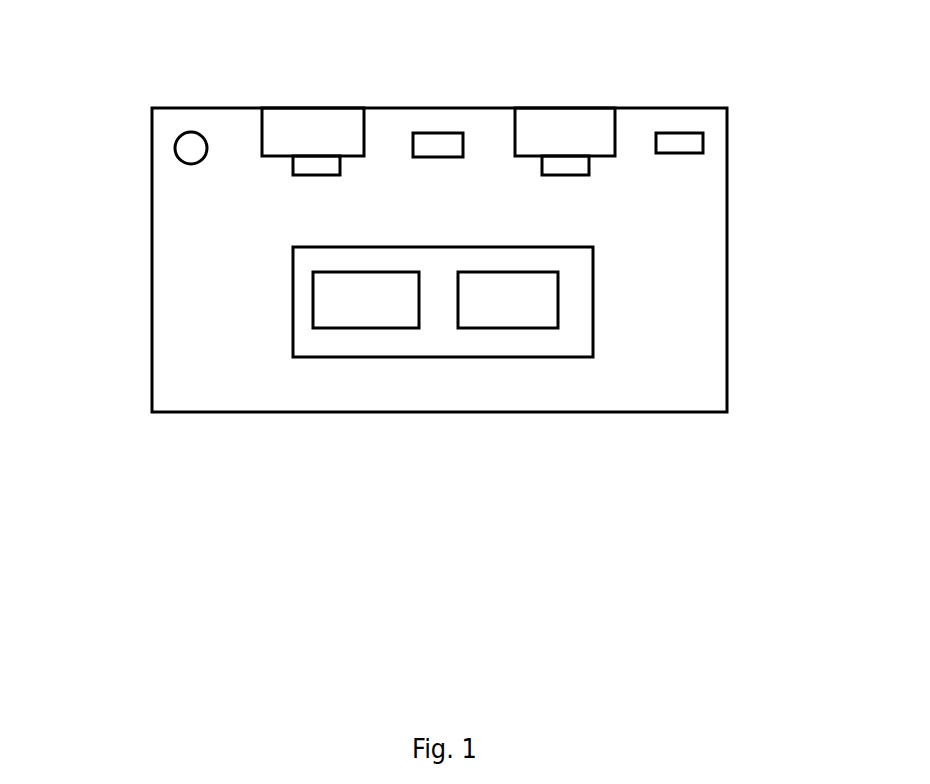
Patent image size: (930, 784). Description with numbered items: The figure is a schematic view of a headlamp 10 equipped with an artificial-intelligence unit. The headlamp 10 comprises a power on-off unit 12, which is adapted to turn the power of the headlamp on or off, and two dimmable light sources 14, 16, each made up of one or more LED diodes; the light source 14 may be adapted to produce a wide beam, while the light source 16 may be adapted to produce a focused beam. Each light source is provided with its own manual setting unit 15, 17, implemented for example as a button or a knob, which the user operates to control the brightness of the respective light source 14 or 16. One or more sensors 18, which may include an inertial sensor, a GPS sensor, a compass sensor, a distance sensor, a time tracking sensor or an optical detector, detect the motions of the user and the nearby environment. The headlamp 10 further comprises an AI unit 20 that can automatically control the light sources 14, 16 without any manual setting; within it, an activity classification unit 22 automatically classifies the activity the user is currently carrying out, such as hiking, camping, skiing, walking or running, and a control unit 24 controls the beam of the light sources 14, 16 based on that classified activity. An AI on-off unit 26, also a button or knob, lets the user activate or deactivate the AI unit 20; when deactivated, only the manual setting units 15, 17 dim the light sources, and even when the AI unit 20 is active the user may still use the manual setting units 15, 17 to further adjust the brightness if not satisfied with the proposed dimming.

The headlamp 10 is at (207, 300).
The power on-off unit 12 is at (183, 145).
The dimmable light source 14 is at (312, 132).
The manual setting unit 15 is at (312, 165).
The dimmable light source 16 is at (575, 132).
The manual setting unit 17 is at (560, 164).
The sensors 18 is at (436, 146).
The AI unit 20 is at (302, 345).
The activity classification unit 22 is at (363, 312).
The control unit 24 is at (504, 312).
The AI on-off unit 26 is at (685, 145).